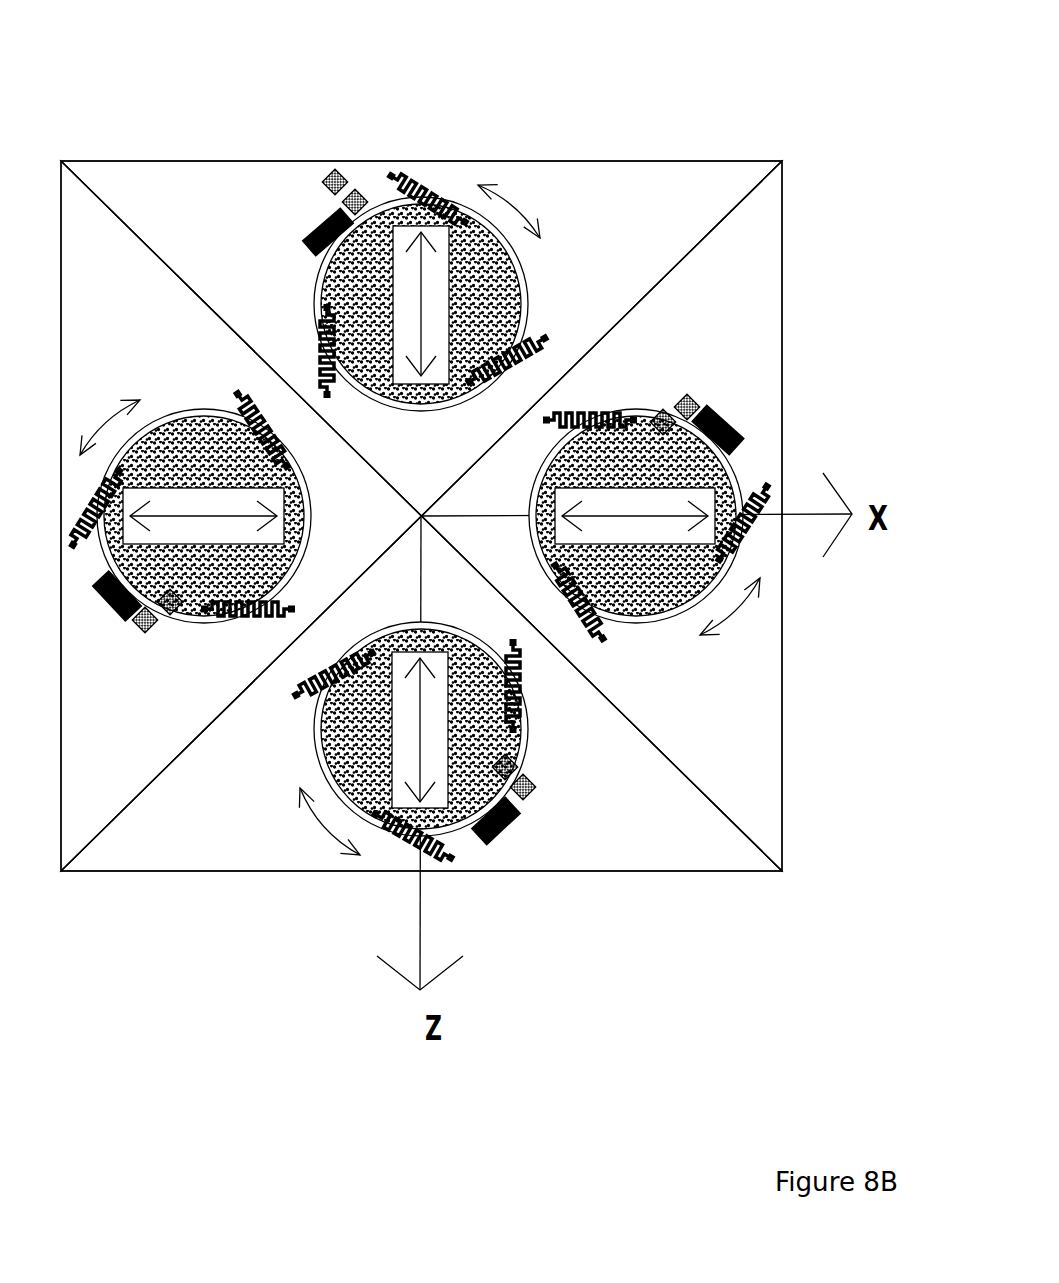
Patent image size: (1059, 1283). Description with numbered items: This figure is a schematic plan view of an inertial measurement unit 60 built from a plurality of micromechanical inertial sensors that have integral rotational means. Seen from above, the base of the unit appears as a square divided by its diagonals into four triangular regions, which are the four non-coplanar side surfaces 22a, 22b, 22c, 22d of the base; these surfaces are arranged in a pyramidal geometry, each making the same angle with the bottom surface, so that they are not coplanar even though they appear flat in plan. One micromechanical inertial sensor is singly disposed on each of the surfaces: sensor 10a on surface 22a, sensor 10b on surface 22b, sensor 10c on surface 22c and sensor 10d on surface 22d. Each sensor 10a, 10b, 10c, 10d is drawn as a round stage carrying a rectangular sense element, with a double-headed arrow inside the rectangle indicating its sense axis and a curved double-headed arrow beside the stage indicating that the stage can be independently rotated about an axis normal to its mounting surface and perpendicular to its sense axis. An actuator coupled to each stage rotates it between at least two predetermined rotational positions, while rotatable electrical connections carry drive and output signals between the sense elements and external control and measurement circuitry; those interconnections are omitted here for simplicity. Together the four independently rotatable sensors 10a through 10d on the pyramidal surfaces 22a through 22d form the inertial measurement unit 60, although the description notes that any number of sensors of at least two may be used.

The inertial measurement unit 60 is at (737, 95).
The micromechanical inertial sensor 10a is at (180, 393).
The micromechanical inertial sensor 10b is at (545, 276).
The micromechanical inertial sensor 10c is at (654, 641).
The micromechanical inertial sensor 10d is at (296, 759).
The non-coplanar side surface 22a is at (123, 726).
The non-coplanar side surface 22b is at (195, 205).
The non-coplanar side surface 22c is at (750, 300).
The non-coplanar side surface 22d is at (640, 842).